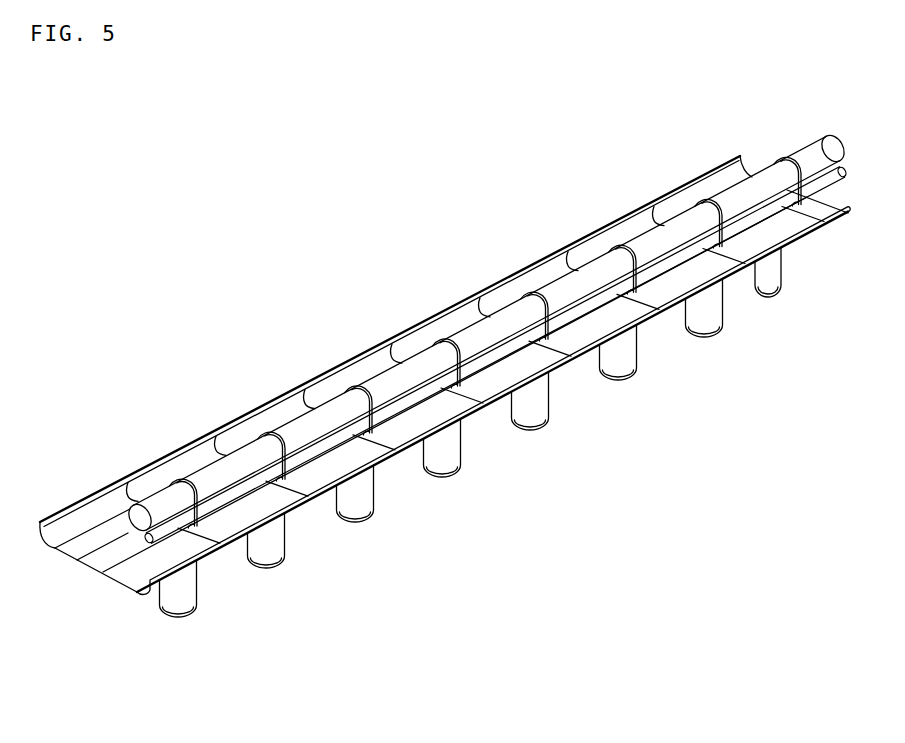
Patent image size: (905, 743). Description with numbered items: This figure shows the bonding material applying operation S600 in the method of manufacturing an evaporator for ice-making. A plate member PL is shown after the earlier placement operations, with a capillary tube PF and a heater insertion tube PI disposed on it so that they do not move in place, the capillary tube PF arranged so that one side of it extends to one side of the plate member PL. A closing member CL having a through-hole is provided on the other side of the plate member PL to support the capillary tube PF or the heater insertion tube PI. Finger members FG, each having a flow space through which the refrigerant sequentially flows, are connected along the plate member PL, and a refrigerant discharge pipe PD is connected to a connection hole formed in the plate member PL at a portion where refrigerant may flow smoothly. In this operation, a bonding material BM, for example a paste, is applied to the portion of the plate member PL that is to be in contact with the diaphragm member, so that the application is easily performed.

The bonding material applying operation S600 is at (217, 244).
The plate member PL is at (56, 494).
The bonding material BM is at (231, 426).
The heater insertion tube PI is at (366, 365).
The capillary tube PF is at (401, 432).
The closing member CL is at (798, 152).
The finger member FG is at (166, 632).
The refrigerant discharge pipe PD is at (773, 305).